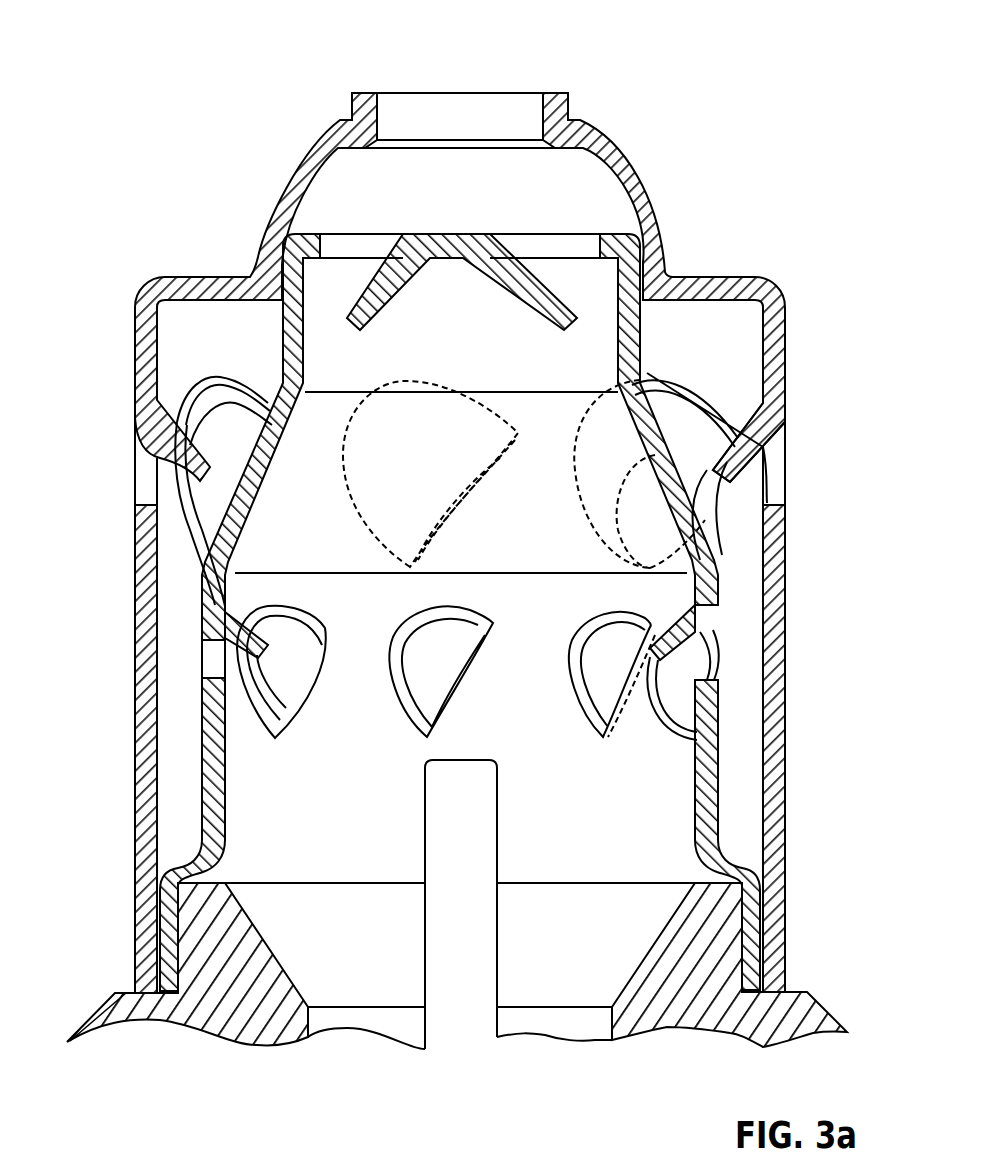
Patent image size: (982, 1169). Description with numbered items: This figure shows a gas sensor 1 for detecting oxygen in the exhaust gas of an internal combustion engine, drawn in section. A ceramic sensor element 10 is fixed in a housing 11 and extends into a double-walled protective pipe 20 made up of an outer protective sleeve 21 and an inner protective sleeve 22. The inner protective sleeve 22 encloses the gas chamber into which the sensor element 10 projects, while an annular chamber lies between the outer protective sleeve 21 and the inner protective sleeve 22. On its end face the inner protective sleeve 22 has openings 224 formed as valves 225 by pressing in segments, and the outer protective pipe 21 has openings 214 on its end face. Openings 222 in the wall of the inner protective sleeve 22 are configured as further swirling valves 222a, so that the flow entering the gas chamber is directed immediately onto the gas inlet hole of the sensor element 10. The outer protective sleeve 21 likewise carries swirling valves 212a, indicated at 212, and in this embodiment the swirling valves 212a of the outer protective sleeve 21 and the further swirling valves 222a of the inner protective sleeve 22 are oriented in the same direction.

The gas sensor 1 is at (778, 140).
The ceramic sensor element 10 is at (467, 1038).
The housing 11 is at (797, 1025).
The double-walled protective pipe 20 is at (792, 263).
The outer protective sleeve 21 is at (777, 748).
The inner protective sleeve 22 is at (708, 813).
The spring element 212 is at (767, 500).
The swirling valves 212a is at (740, 466).
The openings 214 is at (415, 107).
The openings 222 is at (212, 671).
The further swirling valves 222a is at (216, 641).
The openings 224 is at (355, 243).
The valves 225 is at (366, 306).